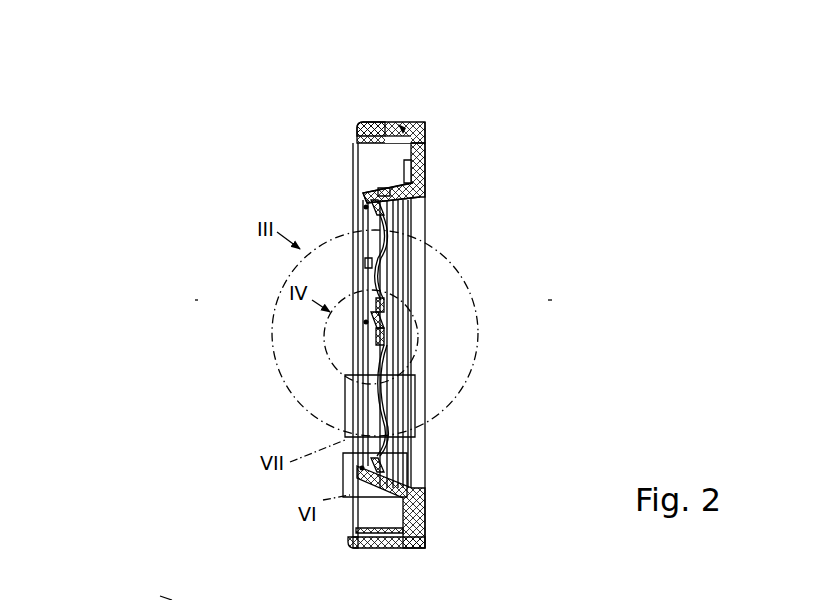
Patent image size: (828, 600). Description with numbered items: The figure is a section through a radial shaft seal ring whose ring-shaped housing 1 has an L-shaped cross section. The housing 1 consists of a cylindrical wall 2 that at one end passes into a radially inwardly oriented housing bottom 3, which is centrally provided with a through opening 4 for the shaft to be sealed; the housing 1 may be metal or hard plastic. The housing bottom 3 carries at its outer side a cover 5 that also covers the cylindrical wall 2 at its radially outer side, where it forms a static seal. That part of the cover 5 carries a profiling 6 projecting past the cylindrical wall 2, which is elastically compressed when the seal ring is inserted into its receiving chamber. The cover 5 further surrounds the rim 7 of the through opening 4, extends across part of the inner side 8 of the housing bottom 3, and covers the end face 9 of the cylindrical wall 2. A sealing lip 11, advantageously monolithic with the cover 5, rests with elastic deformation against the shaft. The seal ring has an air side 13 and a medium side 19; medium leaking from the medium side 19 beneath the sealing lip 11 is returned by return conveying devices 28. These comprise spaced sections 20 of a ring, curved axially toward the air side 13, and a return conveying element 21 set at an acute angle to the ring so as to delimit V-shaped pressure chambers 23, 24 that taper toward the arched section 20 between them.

The housing 1 is at (406, 124).
The cylindrical wall 2 is at (360, 126).
The housing bottom 3 is at (427, 163).
The through opening 4 is at (415, 210).
The cover 5 is at (428, 138).
The profiling 6 is at (397, 553).
The rim 7 is at (420, 493).
The inner side 8 is at (350, 531).
The end face 9 is at (352, 545).
The sealing lip 11 is at (383, 185).
The air side 13 is at (575, 317).
The medium side 19 is at (218, 322).
The sections 20 is at (358, 218).
The return conveying element 21 is at (167, 599).
The pressure chamber 23 is at (367, 264).
The pressure chamber 24 is at (392, 232).
The return conveying device 28 is at (362, 207).